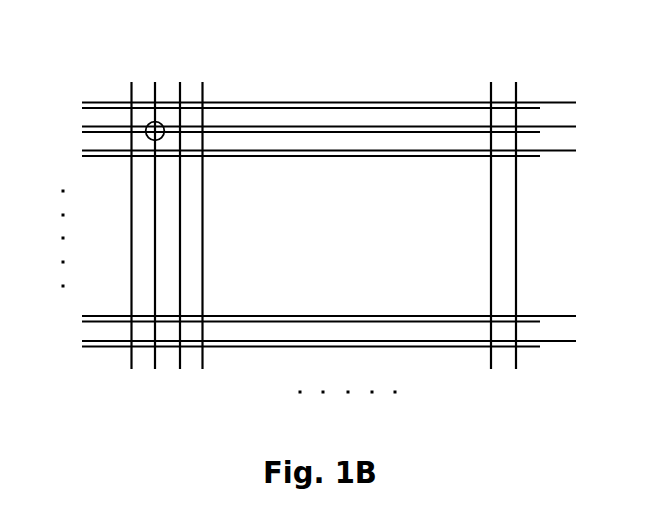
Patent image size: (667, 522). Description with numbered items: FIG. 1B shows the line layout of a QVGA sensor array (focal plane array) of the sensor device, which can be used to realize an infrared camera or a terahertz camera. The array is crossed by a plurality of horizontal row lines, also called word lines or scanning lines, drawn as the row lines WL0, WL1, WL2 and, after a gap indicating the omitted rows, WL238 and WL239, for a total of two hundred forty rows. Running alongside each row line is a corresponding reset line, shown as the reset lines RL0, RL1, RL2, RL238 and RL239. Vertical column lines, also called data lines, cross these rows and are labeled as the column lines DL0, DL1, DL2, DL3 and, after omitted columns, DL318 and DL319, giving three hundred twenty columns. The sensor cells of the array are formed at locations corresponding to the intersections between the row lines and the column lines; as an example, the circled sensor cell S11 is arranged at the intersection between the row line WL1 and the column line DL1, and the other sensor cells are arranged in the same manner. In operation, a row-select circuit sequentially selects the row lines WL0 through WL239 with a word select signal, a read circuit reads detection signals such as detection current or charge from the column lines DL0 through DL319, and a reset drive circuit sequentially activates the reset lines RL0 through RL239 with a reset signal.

The row line WL0 is at (289, 107).
The row line WL1 is at (289, 131).
The row line WL2 is at (289, 155).
The row line WL238 is at (279, 320).
The row line WL239 is at (279, 345).
The reset line RL0 is at (348, 102).
The reset line RL1 is at (348, 127).
The reset line RL2 is at (348, 150).
The reset line RL238 is at (359, 316).
The reset line RL239 is at (359, 340).
The column line DL0 is at (131, 245).
The column line DL1 is at (155, 245).
The column line DL2 is at (180, 245).
The column line DL3 is at (203, 245).
The column line DL318 is at (493, 255).
The column line DL319 is at (518, 255).
The sensor cell S11 is at (160, 121).